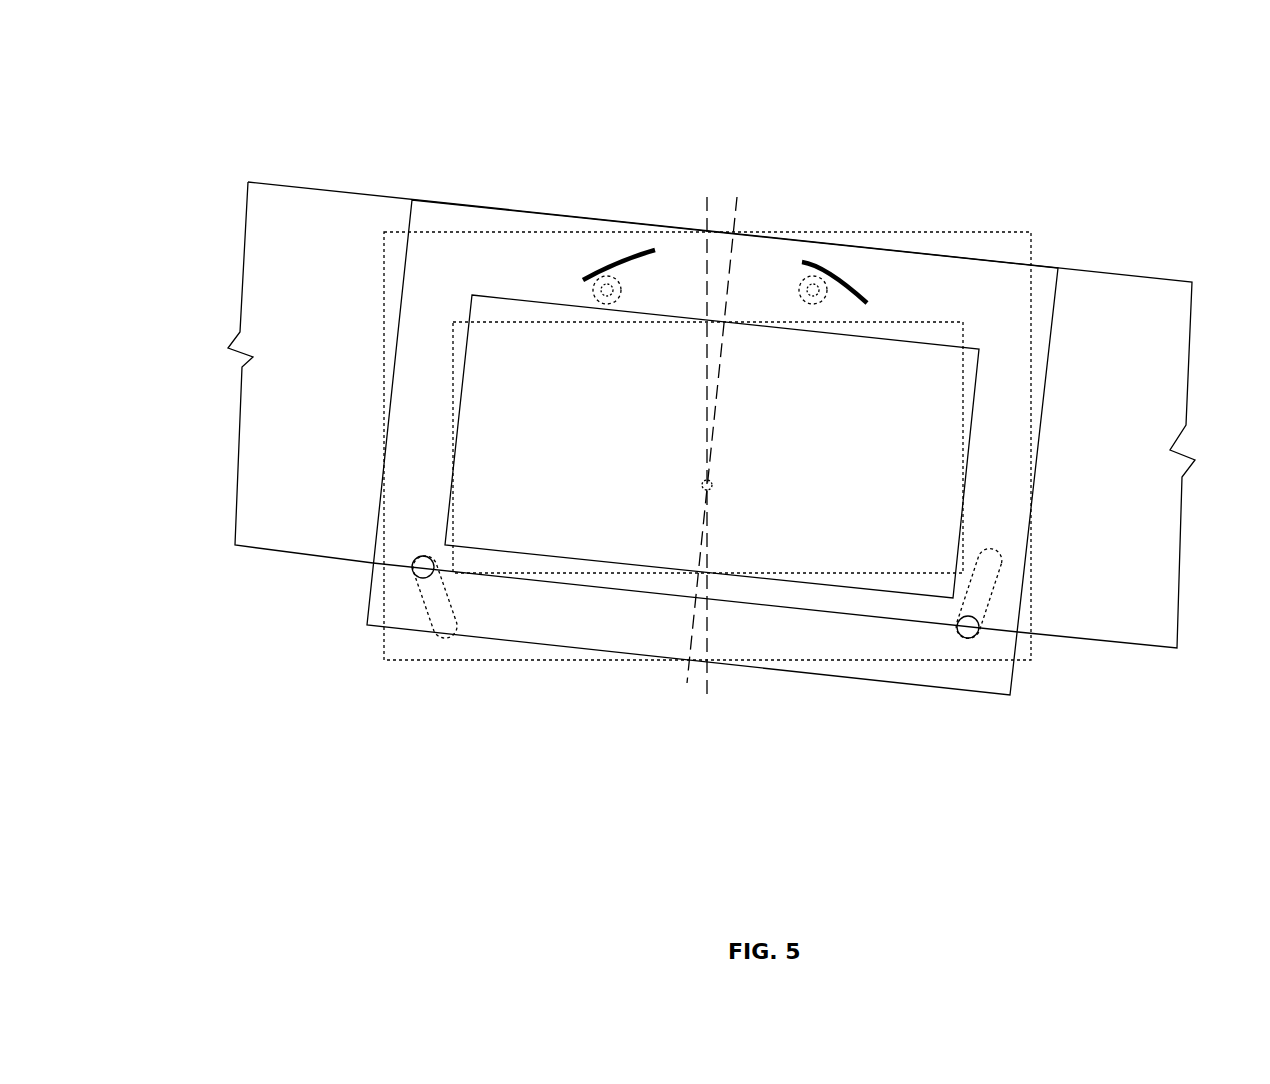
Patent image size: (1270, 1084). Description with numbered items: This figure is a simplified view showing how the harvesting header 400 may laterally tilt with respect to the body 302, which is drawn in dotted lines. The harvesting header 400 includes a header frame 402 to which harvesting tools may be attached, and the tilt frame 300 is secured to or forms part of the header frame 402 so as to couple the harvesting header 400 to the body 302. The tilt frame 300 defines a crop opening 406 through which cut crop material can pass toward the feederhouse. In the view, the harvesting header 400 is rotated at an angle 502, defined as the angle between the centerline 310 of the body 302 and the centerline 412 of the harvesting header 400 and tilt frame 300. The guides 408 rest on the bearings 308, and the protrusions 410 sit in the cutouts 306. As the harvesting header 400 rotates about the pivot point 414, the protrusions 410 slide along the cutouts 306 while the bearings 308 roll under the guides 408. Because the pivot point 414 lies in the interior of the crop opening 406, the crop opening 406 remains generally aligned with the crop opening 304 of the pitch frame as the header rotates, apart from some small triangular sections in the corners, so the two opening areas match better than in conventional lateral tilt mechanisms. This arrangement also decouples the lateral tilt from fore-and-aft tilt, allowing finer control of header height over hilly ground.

The harvesting header 400 is at (1146, 103).
The header frame 402 is at (277, 252).
The tilt frame 300 is at (460, 202).
The body 302 is at (1022, 243).
The crop opening 304 is at (932, 323).
The cutouts 306 is at (430, 620).
The bearings 308 is at (620, 280).
The centerline 310 is at (705, 697).
The crop opening 406 is at (927, 588).
The guides 408 is at (602, 265).
The protrusions 410 is at (413, 570).
The centerline 412 is at (687, 695).
The pivot point 414 is at (712, 492).
The angle 502 is at (717, 210).